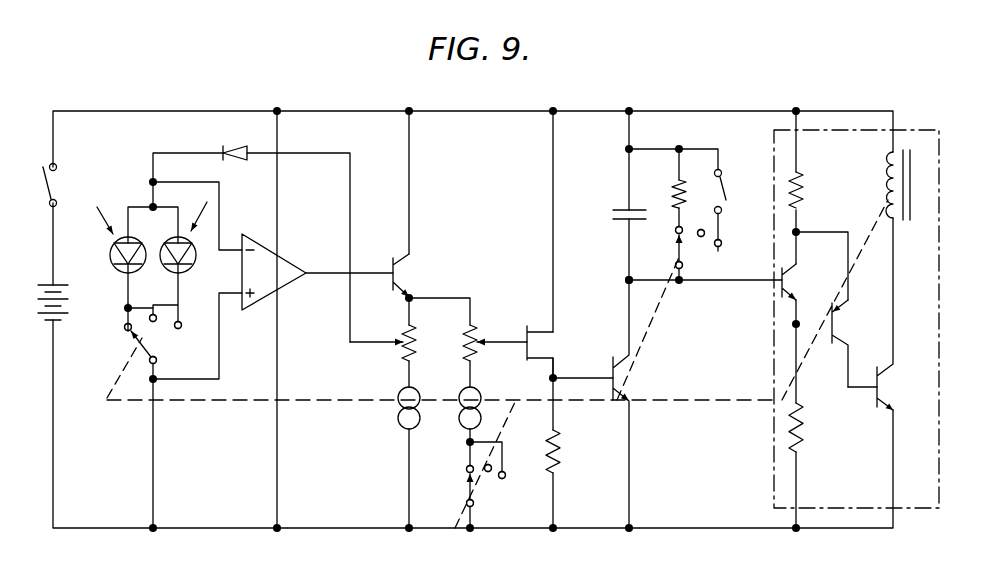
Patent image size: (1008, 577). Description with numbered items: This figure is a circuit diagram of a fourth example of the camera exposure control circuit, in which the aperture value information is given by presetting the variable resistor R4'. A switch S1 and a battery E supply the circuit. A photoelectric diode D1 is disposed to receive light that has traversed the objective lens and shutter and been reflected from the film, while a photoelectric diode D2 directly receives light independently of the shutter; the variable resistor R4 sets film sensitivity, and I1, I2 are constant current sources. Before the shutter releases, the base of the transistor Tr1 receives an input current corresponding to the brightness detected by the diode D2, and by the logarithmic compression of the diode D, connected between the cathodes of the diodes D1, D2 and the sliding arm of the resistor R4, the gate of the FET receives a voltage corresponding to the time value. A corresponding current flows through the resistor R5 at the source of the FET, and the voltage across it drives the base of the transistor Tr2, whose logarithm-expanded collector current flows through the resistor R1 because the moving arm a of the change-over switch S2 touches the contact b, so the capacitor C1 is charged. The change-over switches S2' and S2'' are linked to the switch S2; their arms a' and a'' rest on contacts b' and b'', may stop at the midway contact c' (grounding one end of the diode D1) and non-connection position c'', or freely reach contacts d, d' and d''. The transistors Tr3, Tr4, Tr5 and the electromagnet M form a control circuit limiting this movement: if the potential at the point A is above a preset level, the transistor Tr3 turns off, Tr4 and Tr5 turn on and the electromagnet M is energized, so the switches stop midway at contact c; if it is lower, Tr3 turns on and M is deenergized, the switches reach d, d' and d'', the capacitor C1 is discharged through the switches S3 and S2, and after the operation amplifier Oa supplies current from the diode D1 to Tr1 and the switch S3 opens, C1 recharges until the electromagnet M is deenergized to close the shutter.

The power switch S1 is at (62, 185).
The battery E is at (66, 316).
The diode D is at (233, 162).
The photoelectric diode D1 is at (192, 266).
The photoelectric diode D2 is at (110, 258).
The operation amplifier Oa is at (274, 272).
The change-over switch S2' is at (120, 365).
The moving arm a' is at (165, 358).
The contact b' is at (121, 326).
The midway contact c' is at (160, 323).
The contact d' is at (187, 326).
The transistor Tr1 is at (391, 262).
The variable resistor R4 is at (383, 353).
The variable resistor R4' is at (495, 311).
The field effect transistor FET is at (526, 332).
The constant current source I1 is at (398, 424).
The constant current source I2 is at (456, 416).
The change-over switch S2'' is at (464, 491).
The moving arm a'' is at (489, 508).
The contact b'' is at (461, 469).
The non-connection position c'' is at (489, 480).
The contact d'' is at (512, 474).
The transistor Tr2 is at (610, 370).
The resistor R5 is at (561, 450).
The capacitor C1 is at (618, 217).
The point A is at (627, 279).
The resistor R1 is at (672, 192).
The change-over switch S2 is at (699, 285).
The moving arm a is at (694, 266).
The contact b is at (672, 232).
The contact c is at (700, 224).
The contact d is at (724, 244).
The switch S3 is at (727, 186).
The transistor Tr3 is at (786, 271).
The transistor Tr4 is at (837, 317).
The transistor Tr5 is at (882, 385).
The electromagnet M is at (912, 178).